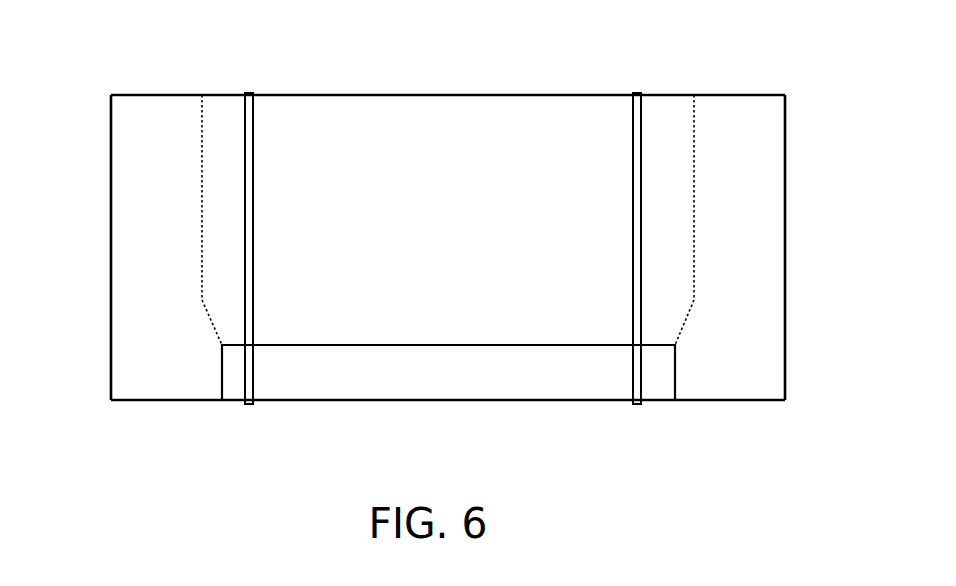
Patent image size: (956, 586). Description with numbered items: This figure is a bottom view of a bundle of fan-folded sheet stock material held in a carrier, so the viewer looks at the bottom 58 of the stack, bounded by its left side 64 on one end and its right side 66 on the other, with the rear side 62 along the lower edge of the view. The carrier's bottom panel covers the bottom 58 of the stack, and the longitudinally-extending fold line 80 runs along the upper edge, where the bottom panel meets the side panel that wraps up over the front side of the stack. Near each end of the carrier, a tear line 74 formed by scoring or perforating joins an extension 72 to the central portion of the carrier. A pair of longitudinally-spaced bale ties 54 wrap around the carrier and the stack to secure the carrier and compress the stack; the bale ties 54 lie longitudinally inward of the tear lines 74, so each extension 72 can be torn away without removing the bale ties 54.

The bale ties 54 is at (248, 127).
The bottom 58 is at (392, 380).
The rear side 62 is at (475, 403).
The left side 64 is at (108, 238).
The right side 66 is at (788, 227).
The extensions 72 is at (165, 373).
The tear line 74 is at (200, 128).
The fold line 80 is at (412, 95).